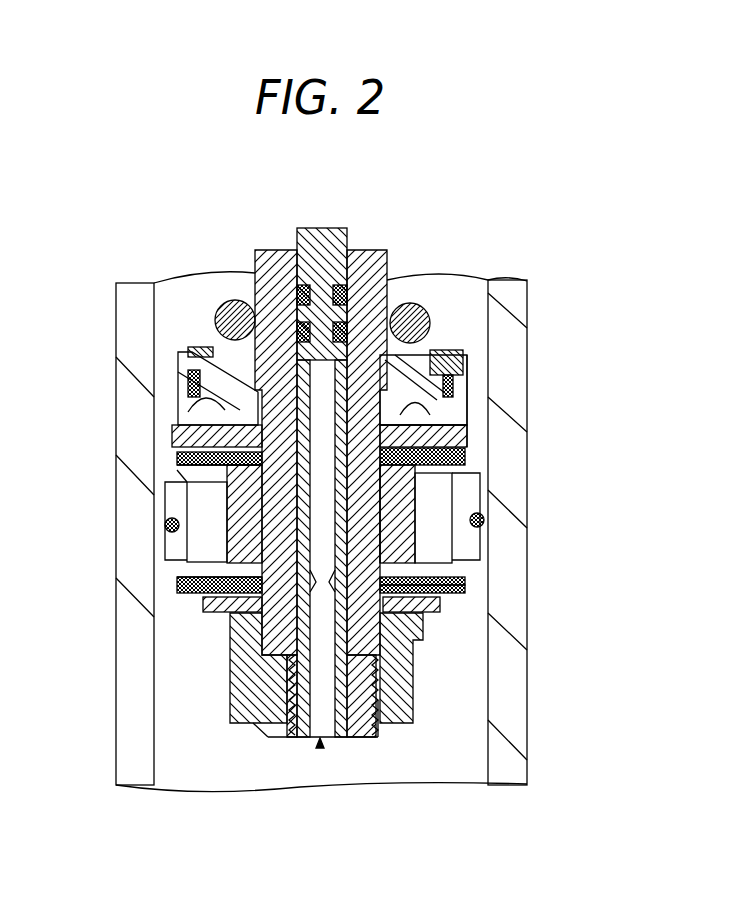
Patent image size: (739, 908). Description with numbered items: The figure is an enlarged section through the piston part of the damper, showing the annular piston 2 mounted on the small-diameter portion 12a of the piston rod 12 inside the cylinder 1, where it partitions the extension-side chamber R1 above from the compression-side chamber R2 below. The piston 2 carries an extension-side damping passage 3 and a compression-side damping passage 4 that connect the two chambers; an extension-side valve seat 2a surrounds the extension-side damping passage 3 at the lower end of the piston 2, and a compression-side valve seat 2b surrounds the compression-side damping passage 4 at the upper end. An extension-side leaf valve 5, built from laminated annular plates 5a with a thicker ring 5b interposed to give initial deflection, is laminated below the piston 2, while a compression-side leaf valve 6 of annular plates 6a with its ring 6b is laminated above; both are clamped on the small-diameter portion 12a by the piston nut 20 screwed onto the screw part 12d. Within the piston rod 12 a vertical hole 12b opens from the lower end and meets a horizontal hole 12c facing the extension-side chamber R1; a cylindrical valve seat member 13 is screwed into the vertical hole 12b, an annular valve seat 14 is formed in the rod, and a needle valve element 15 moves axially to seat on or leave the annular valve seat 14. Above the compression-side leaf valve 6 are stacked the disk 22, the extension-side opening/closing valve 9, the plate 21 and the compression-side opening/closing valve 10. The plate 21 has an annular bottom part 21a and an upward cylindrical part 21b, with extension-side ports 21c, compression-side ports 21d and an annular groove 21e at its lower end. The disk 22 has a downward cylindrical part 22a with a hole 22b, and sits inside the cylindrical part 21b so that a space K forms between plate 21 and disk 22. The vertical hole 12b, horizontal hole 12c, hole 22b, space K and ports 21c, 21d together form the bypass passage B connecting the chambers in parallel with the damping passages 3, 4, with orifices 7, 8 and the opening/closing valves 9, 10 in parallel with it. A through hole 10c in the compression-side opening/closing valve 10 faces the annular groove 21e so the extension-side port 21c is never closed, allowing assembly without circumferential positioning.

The cylinder 1 is at (116, 301).
The piston 2 is at (480, 483).
The extension-side valve seat 2a is at (180, 580).
The compression-side valve seat 2b is at (468, 458).
The extension-side damping passage 3 is at (437, 518).
The compression-side damping passage 4 is at (205, 522).
The extension-side leaf valve 5 is at (477, 600).
The annular plate 5a is at (475, 584).
The ring 5b is at (475, 592).
The compression-side leaf valve 6 is at (195, 475).
The annular plate 6a is at (180, 470).
The ring 6b is at (177, 465).
The orifice 7 is at (200, 418).
The orifice 8 is at (470, 452).
The extension-side opening/closing valve 9 is at (178, 395).
The compression-side opening/closing valve 10 is at (155, 453).
The through hole 10c is at (175, 505).
The piston rod 12 is at (405, 243).
The small-diameter portion 12a is at (385, 545).
The vertical hole 12b is at (298, 330).
The horizontal hole 12c is at (364, 410).
The screw part 12d is at (412, 700).
The valve seat member 13 is at (347, 742).
The annular valve seat 14 is at (470, 573).
The needle valve element 15 is at (230, 606).
The piston nut 20 is at (257, 725).
The plate 21 is at (473, 353).
The bottom part 21a is at (460, 420).
The cylindrical part 21b is at (475, 375).
The extension-side port 21c is at (458, 432).
The compression-side port 21d is at (180, 432).
The annular groove 21e is at (470, 460).
The disk 22 is at (468, 334).
The cylindrical part 22a is at (195, 358).
The hole 22b is at (410, 305).
The bypass passage B is at (320, 748).
The space K is at (479, 355).
The extension-side chamber R1 is at (470, 300).
The compression-side chamber R2 is at (183, 760).